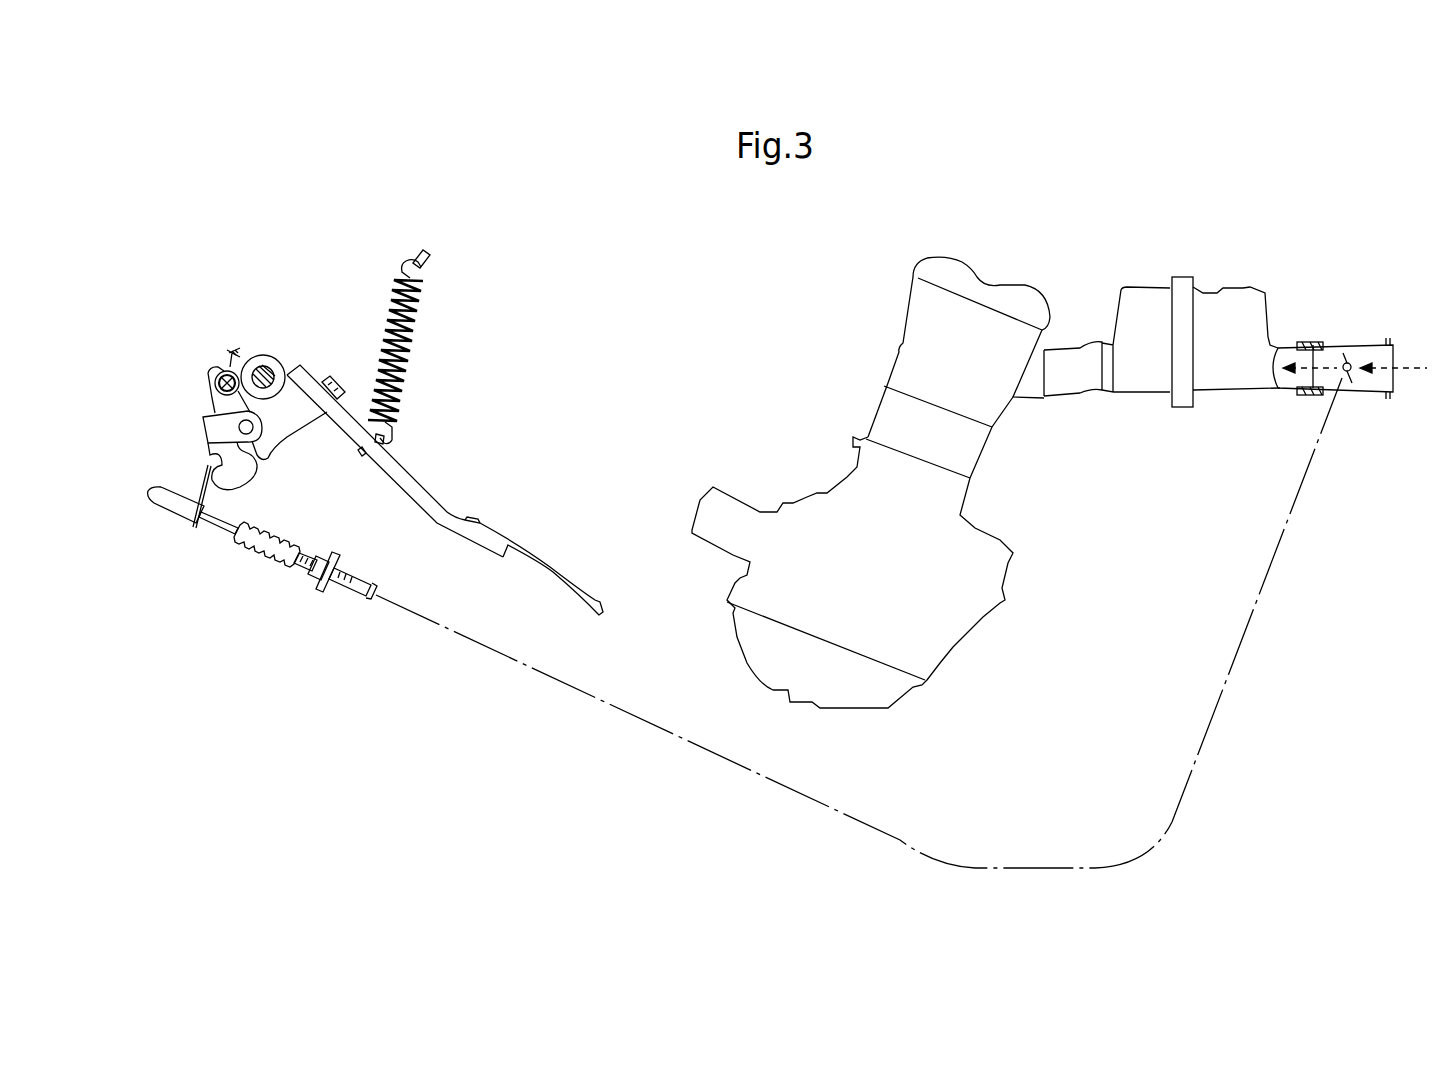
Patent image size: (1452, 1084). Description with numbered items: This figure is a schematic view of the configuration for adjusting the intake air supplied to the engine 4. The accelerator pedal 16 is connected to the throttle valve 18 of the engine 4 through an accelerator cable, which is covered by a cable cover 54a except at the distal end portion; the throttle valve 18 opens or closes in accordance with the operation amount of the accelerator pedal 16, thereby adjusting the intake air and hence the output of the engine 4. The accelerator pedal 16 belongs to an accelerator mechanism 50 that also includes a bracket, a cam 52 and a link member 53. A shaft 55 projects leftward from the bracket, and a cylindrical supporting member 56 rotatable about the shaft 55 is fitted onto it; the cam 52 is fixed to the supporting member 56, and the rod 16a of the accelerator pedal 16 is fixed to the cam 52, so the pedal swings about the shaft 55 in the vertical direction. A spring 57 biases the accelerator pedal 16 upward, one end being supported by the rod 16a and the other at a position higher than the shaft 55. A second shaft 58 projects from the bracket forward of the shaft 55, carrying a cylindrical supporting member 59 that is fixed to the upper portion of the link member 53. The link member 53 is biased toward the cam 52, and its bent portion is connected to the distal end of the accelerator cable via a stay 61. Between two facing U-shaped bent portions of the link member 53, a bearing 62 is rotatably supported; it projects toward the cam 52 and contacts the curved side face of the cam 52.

The engine 4 is at (985, 290).
The throttle valve 18 is at (1345, 357).
The accelerator pedal 16 is at (518, 535).
The rod 16a is at (390, 478).
The accelerator mechanism 50 is at (271, 323).
The cam 52 is at (288, 438).
The link member 53 is at (212, 427).
The cable cover 54a is at (630, 718).
The shaft 55 is at (268, 373).
The supporting member 56 is at (267, 357).
The spring 57 is at (410, 363).
The shaft 58 is at (218, 383).
The supporting member 59 is at (230, 352).
The stay 61 is at (198, 491).
The bearing 62 is at (243, 445).